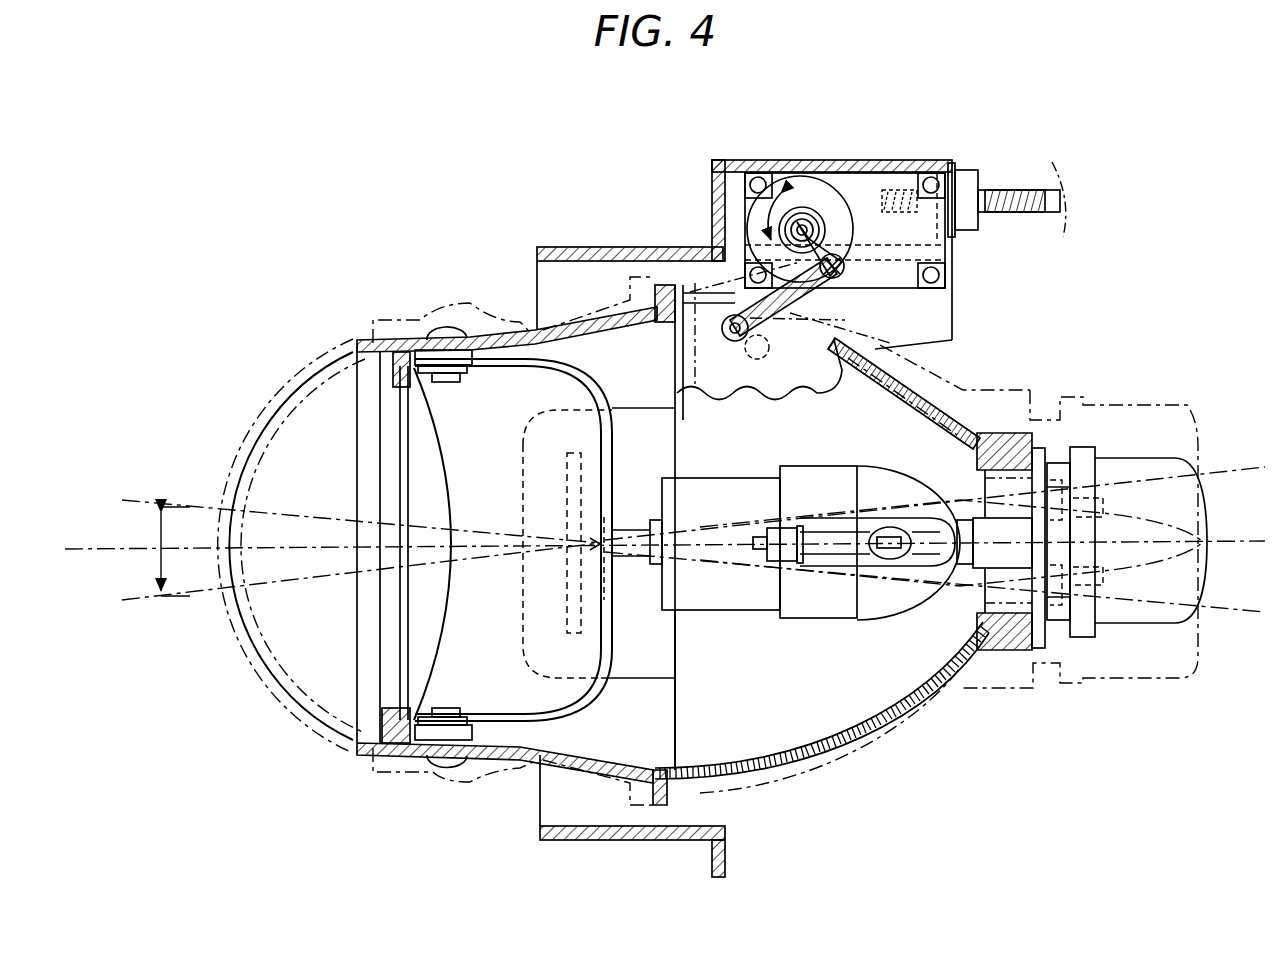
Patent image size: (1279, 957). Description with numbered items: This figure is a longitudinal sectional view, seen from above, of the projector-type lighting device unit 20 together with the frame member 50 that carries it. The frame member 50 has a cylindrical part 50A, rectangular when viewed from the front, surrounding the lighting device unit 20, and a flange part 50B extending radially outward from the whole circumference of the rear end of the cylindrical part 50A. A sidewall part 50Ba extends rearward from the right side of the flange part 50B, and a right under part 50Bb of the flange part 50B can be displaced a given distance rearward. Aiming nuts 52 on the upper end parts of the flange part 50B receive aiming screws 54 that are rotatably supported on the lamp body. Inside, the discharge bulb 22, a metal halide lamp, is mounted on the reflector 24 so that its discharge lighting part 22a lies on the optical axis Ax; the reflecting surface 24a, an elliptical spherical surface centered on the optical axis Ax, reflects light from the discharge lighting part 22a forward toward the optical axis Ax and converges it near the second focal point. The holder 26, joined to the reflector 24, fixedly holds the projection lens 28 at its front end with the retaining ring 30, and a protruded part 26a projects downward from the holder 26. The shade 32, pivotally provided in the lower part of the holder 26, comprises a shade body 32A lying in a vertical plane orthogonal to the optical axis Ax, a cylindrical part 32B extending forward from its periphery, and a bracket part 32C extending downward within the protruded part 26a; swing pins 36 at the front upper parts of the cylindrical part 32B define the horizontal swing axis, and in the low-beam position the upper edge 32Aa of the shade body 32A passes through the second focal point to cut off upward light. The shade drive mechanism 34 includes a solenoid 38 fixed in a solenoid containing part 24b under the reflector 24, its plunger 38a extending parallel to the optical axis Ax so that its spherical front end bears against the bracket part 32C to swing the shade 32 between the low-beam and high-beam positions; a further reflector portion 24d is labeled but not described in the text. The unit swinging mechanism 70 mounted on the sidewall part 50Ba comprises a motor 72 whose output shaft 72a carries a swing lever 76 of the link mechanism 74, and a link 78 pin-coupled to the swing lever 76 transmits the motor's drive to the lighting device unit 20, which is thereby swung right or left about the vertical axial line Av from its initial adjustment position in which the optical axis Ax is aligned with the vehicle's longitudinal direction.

The lighting device unit 20 is at (262, 278).
The discharge bulb 22 is at (856, 526).
The discharge lighting part 22a is at (880, 552).
The reflector 24 is at (931, 565).
The reflecting surface 24a is at (947, 432).
The solenoid containing part 24b is at (721, 516).
The reflector bracket portion 24d is at (690, 300).
The holder 26 is at (516, 534).
The protruded part 26a is at (633, 412).
The projection lens 28 is at (292, 388).
The retaining ring 30 is at (355, 340).
The shade 32 is at (473, 524).
The shade body 32A is at (585, 608).
The upper edge 32Aa is at (605, 497).
The cylindrical part 32B is at (440, 582).
The bracket part 32C is at (562, 497).
The shade drive mechanism 34 is at (703, 632).
The swing pins 36 is at (447, 382).
The solenoid 38 is at (700, 480).
The plunger 38a is at (656, 565).
The frame member 50 is at (805, 499).
The cylindrical part 50A is at (612, 840).
The flange part 50B is at (725, 855).
The sidewall part 50Ba is at (877, 160).
The right under part 50Bb is at (988, 188).
The aiming nuts 52 is at (968, 178).
The aiming screws 54 is at (1025, 212).
The unit swinging mechanism 70 is at (851, 232).
The motor 72 is at (795, 193).
The output shaft 72a is at (790, 218).
The link mechanism 74 is at (862, 262).
The swing lever 76 is at (840, 256).
The link 78 is at (857, 307).
The optical axis Ax is at (75, 556).
The vertical axial line Av is at (592, 548).